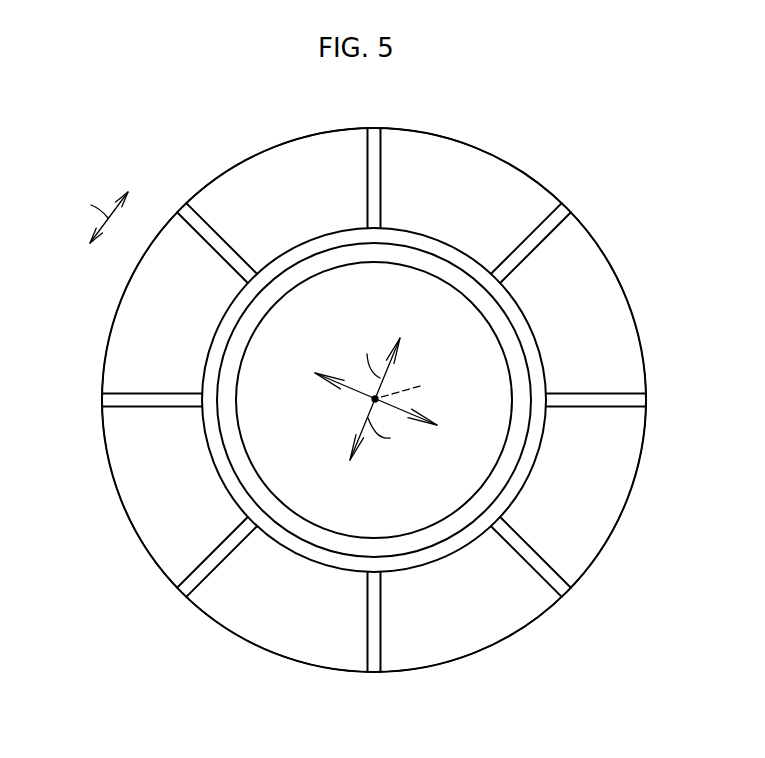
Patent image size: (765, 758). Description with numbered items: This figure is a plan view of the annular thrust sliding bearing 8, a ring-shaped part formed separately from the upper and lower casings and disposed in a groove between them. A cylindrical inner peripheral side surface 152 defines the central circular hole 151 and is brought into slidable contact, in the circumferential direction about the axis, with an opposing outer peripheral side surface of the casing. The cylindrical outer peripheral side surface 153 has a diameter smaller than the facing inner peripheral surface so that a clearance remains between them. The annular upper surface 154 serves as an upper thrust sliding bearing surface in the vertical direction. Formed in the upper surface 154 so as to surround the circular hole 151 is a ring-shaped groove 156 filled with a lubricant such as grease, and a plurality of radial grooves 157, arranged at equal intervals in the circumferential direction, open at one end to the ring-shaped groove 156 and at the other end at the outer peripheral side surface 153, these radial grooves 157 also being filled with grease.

The annular thrust sliding bearing 8 is at (354, 404).
The central circular hole 151 is at (435, 498).
The cylindrical inner peripheral side surface 152 is at (320, 268).
The cylindrical outer peripheral side surface 153 is at (228, 630).
The annular upper surface 154 is at (512, 178).
The ring-shaped groove 156 is at (348, 563).
The radial grooves 157 is at (372, 183).